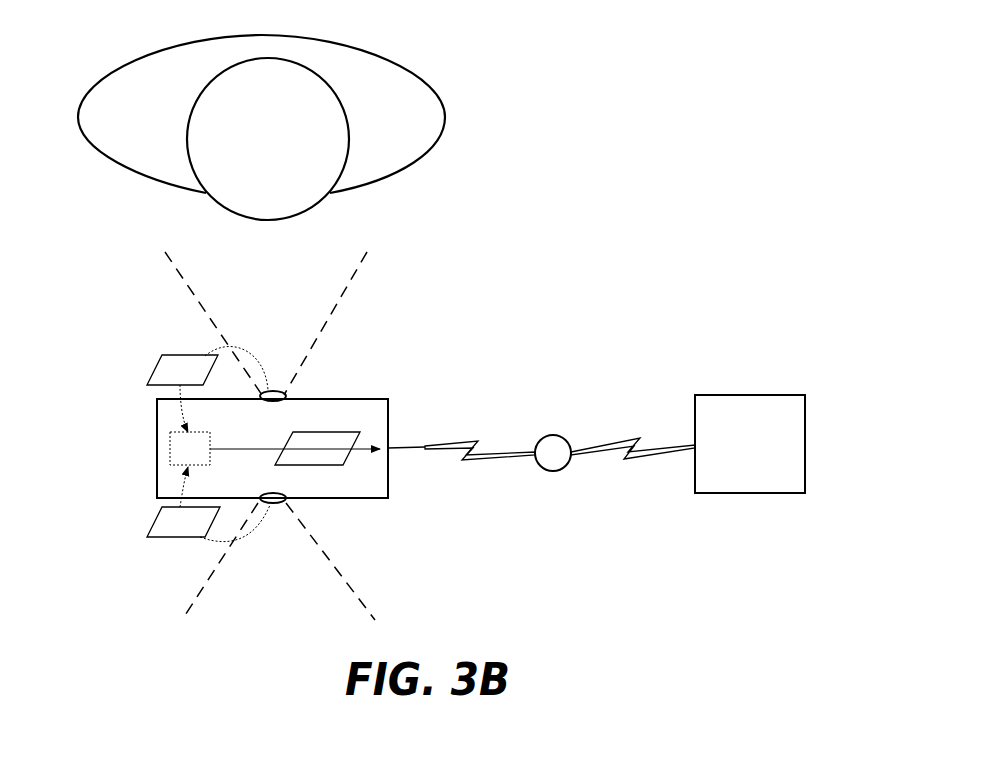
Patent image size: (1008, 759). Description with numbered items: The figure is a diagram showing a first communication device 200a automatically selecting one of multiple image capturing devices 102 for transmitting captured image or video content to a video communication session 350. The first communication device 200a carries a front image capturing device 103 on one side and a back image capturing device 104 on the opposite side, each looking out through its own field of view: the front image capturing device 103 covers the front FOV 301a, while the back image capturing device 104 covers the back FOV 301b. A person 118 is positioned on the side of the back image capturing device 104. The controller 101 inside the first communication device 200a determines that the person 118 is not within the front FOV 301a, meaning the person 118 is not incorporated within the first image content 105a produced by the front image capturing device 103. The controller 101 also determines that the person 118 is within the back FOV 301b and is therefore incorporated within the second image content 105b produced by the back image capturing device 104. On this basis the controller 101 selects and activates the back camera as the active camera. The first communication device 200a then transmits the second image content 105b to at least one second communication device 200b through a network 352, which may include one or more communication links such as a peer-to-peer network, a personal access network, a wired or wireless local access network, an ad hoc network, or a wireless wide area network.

The person 118 is at (445, 117).
The video communication session 350 is at (117, 398).
The first communication device 200a is at (157, 450).
The second communication device 200b is at (750, 444).
The controller 101 is at (275, 448).
The second image content 105b is at (253, 406).
The first image content 105a is at (208, 504).
The back image capturing device 104 is at (278, 388).
The front image capturing device 103 is at (283, 503).
The image capturing devices 102 is at (318, 373).
The back FOV 301b is at (217, 318).
The front FOV 301a is at (322, 552).
The network 352 is at (553, 453).